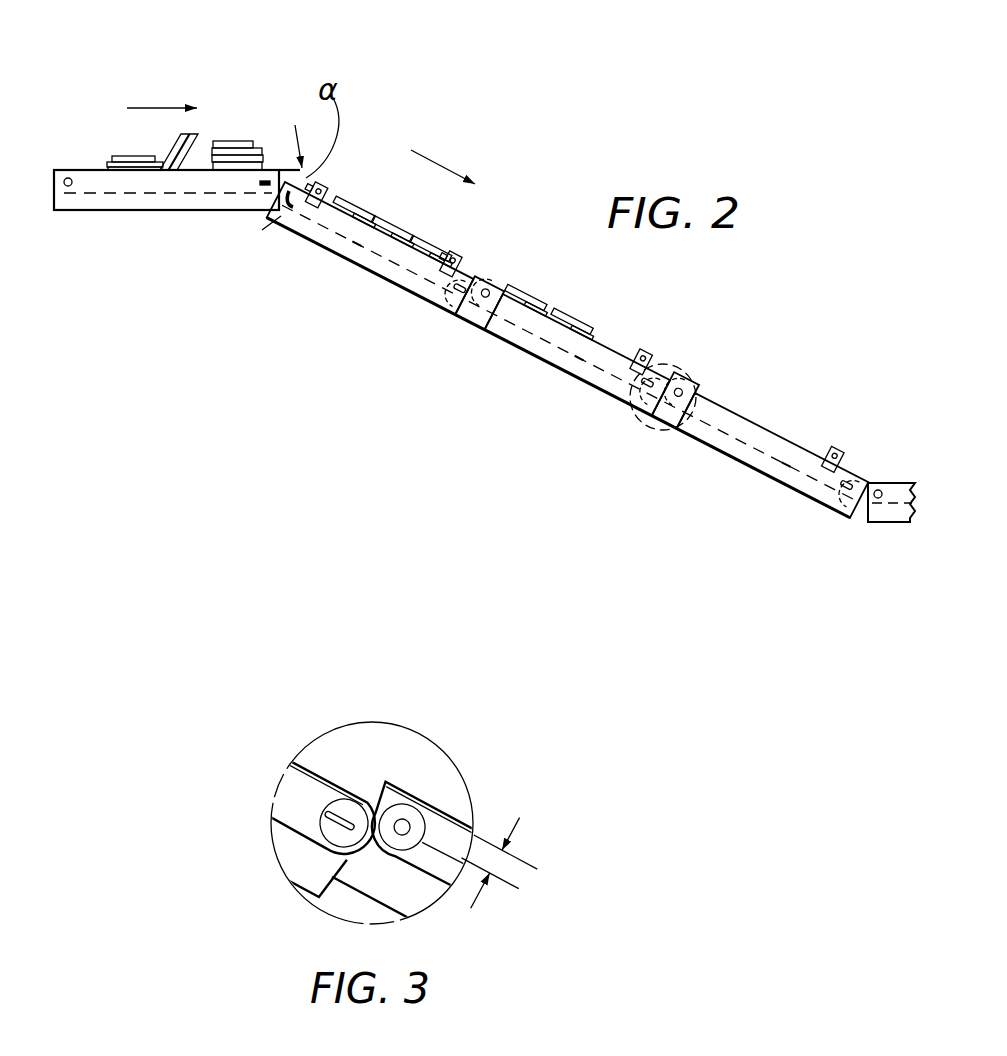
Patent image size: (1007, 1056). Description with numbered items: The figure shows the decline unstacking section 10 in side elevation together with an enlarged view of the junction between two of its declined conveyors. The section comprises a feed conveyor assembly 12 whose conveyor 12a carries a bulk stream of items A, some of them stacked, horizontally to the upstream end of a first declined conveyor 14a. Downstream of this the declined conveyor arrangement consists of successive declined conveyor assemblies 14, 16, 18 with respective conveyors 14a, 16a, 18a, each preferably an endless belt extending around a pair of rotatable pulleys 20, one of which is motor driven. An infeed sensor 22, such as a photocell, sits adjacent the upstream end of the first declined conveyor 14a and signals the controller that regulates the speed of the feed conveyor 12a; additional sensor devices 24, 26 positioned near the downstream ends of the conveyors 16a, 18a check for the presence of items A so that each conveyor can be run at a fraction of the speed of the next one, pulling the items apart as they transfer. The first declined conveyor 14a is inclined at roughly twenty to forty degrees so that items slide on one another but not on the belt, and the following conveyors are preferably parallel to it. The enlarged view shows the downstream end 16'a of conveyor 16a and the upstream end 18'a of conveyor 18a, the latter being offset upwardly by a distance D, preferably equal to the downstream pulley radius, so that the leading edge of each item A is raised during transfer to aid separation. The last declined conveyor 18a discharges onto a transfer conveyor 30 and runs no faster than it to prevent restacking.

In FIG. 2, the decline unstacking section 10 is at (378, 128).
In FIG. 2, the feed conveyor assembly 12 is at (108, 214).
In FIG. 2, the feed conveyor 12a is at (173, 193).
In FIG. 2, the first declined conveyor assembly 14 is at (407, 301).
In FIG. 2, the first declined conveyor 14a is at (357, 246).
In FIG. 2, the declined conveyor assembly 16 is at (556, 363).
In FIG. 2, the declined conveyor 16a is at (580, 358).
In FIG. 2, the declined conveyor assembly 18 is at (758, 459).
In FIG. 2, the last declined conveyor 18a is at (787, 465).
In FIG. 3, the rotatable pulleys 20 is at (402, 820).
In FIG. 2, the infeed sensor 22 is at (327, 188).
In FIG. 2, the clamp 24 is at (643, 355).
In FIG. 2, the clamp 26 is at (838, 449).
In FIG. 2, the transfer conveyor 30 is at (888, 523).
In FIG. 2, the items A is at (255, 143).
In FIG. 3, the offset distance D is at (499, 864).
In FIG. 3, the second conveyor belt end 16'a is at (304, 786).
In FIG. 3, the third conveyor belt end 18'a is at (432, 836).